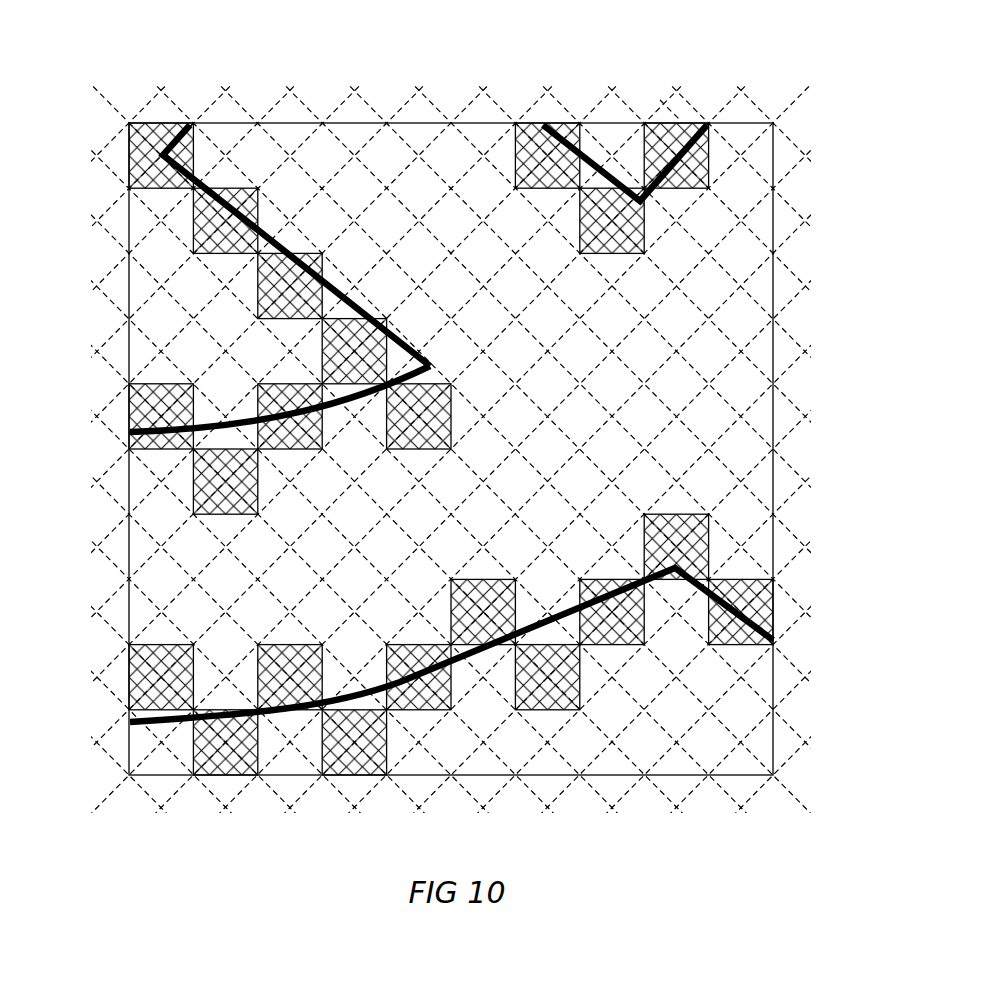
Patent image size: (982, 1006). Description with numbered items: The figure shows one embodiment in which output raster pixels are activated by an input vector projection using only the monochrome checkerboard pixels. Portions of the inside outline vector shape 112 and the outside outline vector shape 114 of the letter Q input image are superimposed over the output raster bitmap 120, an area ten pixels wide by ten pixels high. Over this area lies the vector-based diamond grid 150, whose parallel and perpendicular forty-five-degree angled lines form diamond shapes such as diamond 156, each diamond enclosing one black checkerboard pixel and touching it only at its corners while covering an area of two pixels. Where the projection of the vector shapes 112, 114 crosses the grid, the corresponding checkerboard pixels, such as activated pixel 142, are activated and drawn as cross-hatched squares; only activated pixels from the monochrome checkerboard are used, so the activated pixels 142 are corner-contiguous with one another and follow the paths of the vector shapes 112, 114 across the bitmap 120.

The vector-based diamond grid 150 is at (491, 449).
The diamond 156 is at (670, 112).
The activated pixel 142 is at (668, 124).
The inside outline vector shape 112 is at (703, 127).
The outside outline vector shape 114 is at (775, 645).
The output raster bitmap 120 is at (675, 777).